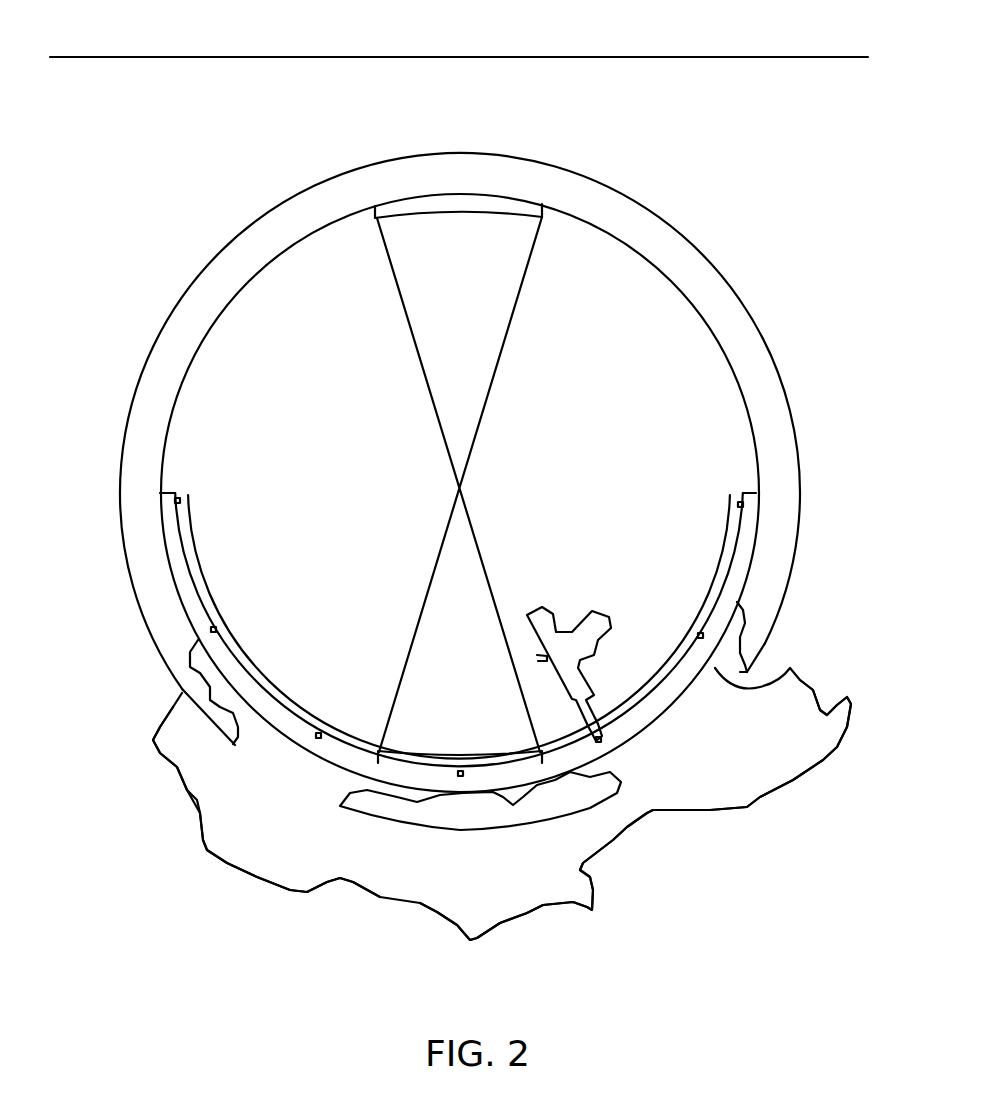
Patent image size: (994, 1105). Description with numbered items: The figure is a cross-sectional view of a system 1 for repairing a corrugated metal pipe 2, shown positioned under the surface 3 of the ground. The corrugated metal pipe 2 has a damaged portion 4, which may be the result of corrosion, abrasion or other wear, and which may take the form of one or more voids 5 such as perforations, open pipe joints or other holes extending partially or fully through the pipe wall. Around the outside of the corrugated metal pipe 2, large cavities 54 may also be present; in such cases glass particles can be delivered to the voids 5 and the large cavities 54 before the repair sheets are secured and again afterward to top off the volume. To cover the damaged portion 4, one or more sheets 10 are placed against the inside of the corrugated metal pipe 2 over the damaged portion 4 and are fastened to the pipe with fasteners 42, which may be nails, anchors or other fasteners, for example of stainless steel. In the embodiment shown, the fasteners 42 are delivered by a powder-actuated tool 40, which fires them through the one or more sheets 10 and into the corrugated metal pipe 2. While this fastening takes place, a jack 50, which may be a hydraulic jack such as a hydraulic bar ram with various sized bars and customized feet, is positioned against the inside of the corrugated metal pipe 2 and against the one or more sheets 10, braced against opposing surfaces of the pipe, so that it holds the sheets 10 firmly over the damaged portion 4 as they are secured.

The system 1 is at (774, 206).
The corrugated metal pipe 2 is at (352, 183).
The surface 3 is at (562, 56).
The damaged portion 4 is at (755, 686).
The voids 5 is at (257, 728).
The sheets 10 is at (265, 701).
The powder-actuated tool 40 is at (536, 607).
The fasteners 42 is at (216, 630).
The jack 50 is at (379, 214).
The large cavities 54 is at (512, 904).